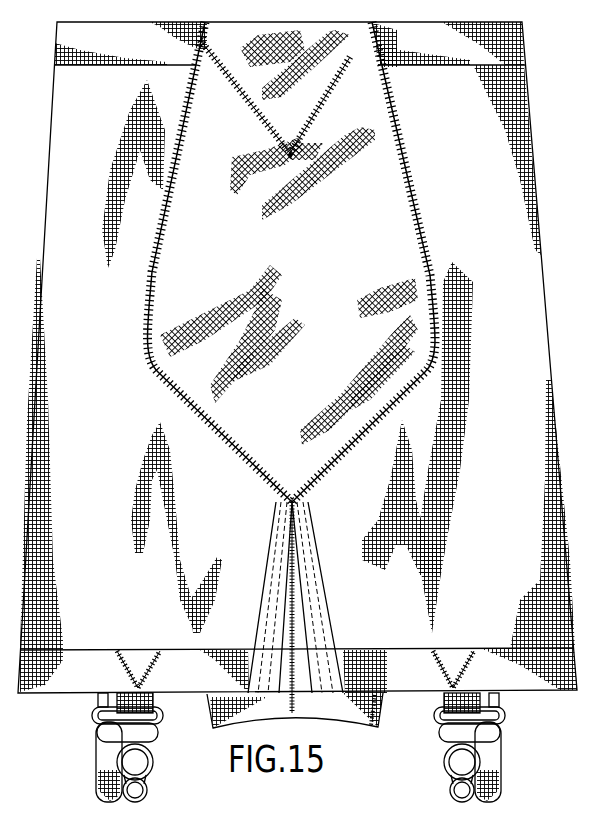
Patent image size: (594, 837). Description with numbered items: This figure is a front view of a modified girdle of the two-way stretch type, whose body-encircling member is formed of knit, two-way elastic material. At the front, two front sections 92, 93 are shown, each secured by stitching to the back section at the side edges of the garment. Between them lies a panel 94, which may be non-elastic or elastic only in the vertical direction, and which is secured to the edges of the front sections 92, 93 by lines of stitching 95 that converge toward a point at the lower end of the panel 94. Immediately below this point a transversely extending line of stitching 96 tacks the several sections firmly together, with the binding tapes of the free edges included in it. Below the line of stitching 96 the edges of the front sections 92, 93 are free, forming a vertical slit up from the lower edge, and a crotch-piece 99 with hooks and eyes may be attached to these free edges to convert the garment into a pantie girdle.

The front section 92 is at (533, 270).
The front section 93 is at (62, 95).
The panel 94 is at (383, 230).
The lines of stitching 95 is at (162, 226).
The transversely extending line of stitching 96 is at (302, 500).
The crotch-piece 99 is at (333, 710).